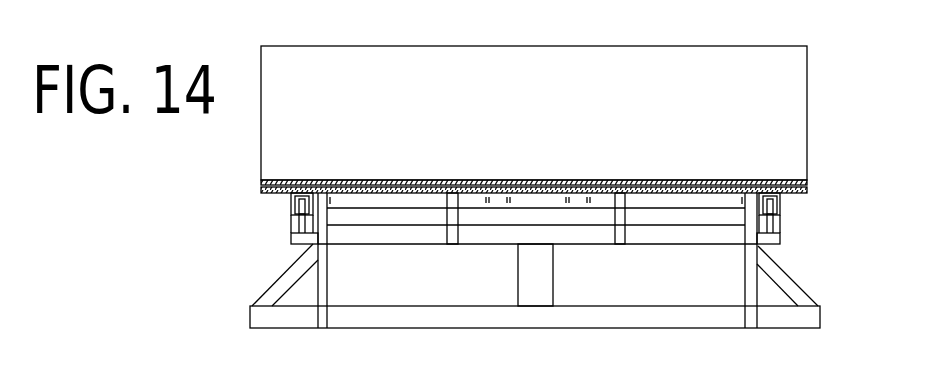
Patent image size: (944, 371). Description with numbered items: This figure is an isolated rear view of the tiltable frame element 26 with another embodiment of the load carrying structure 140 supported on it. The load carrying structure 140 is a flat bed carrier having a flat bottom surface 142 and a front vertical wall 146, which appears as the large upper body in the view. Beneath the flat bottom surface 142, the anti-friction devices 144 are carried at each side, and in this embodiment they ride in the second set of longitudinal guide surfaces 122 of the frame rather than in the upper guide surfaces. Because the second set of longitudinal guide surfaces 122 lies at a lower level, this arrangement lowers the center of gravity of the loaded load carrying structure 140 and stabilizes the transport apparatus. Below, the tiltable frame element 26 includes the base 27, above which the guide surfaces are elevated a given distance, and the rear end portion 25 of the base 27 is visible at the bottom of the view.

The load carrying structure 140 is at (565, 96).
The front vertical wall 146 is at (552, 108).
The flat bottom surface 142 is at (757, 181).
The anti-friction devices 144 is at (290, 208).
The second set of longitudinal guide surfaces 122 is at (291, 226).
The tiltable frame element 26 is at (506, 276).
The rear end portion 25 is at (437, 317).
The base 27 is at (652, 306).